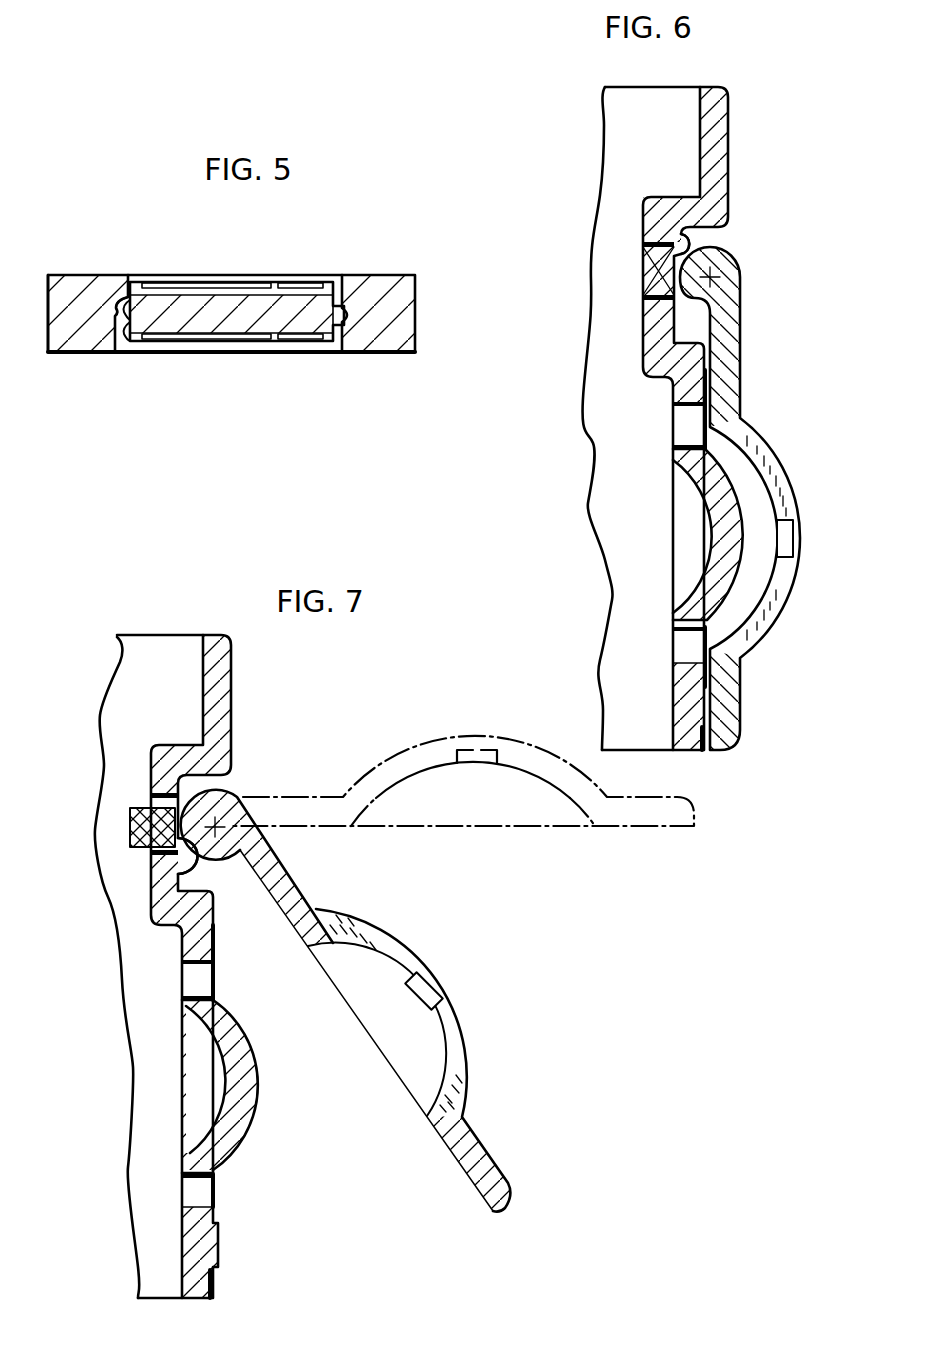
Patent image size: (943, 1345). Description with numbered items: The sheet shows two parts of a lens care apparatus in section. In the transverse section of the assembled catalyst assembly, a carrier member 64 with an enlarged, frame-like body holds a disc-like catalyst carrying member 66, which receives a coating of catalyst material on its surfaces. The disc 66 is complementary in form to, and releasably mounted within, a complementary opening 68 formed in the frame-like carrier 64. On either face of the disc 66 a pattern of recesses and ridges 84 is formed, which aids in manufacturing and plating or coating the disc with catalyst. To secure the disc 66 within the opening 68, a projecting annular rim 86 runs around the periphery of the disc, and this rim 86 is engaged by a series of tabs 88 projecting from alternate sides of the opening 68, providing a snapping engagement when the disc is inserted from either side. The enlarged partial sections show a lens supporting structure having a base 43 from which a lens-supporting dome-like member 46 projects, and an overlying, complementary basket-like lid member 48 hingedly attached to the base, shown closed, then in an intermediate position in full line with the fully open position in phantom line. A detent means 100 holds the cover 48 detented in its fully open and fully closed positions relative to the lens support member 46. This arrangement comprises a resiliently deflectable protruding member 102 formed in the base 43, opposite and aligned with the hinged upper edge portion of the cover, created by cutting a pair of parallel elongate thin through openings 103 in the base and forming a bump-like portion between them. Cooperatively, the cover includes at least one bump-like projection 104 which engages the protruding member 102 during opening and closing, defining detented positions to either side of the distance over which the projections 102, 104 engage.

In FIG. 6, the base 43 is at (723, 186).
In FIG. 7, the base 43 is at (163, 966).
In FIG. 6, the lens-supporting dome-like member 46 is at (723, 490).
In FIG. 7, the lens-supporting dome-like member 46 is at (220, 1086).
In FIG. 6, the lid member 48 is at (803, 525).
In FIG. 7, the lid member 48 is at (437, 974).
In FIG. 5, the carrier member 64 is at (98, 288).
In FIG. 5, the catalyst carrying disc 66 is at (273, 340).
In FIG. 5, the complementary opening 68 is at (125, 337).
In FIG. 5, the recesses and ridges 84 is at (290, 283).
In FIG. 5, the annular rim 86 is at (357, 288).
In FIG. 5, the tabs 88 is at (140, 277).
In FIG. 6, the detent means 100 is at (775, 484).
In FIG. 6, the resiliently deflectable protruding member 102 is at (655, 279).
In FIG. 7, the resiliently deflectable protruding member 102 is at (133, 820).
In FIG. 6, the elongate thin through openings 103 is at (643, 249).
In FIG. 7, the elongate thin through openings 103 is at (155, 800).
In FIG. 6, the projection 104 is at (643, 208).
In FIG. 7, the projection 104 is at (152, 808).